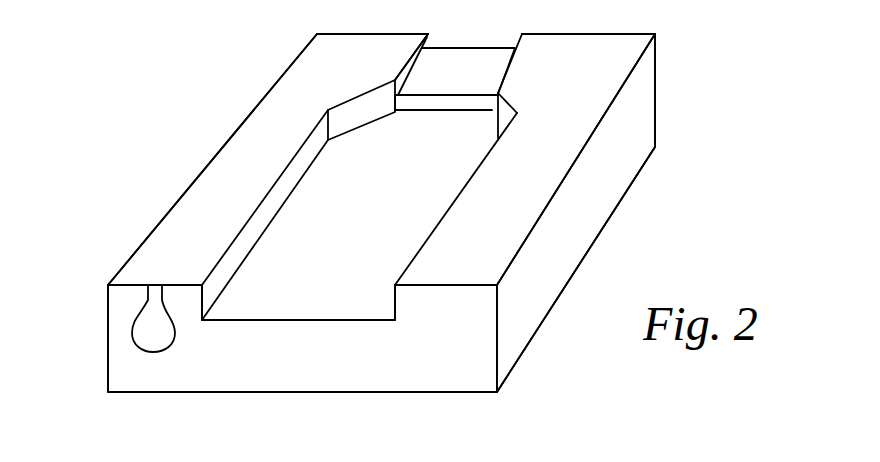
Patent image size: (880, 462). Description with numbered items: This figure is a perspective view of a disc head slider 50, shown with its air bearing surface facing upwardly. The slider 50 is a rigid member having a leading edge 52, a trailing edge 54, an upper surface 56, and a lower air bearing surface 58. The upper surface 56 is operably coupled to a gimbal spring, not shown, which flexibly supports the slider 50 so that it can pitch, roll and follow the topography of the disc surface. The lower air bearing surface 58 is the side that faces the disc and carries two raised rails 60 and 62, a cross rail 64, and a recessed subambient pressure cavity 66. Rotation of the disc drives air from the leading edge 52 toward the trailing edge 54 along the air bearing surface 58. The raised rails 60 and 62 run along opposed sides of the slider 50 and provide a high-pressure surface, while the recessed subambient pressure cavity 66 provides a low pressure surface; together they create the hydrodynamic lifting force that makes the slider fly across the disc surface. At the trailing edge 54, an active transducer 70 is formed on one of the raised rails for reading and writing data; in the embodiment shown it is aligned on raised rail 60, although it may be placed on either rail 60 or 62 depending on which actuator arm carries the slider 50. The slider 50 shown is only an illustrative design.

The slider 50 is at (670, 93).
The leading edge 52 is at (568, 34).
The trailing edge 54 is at (238, 375).
The upper surface 56 is at (534, 333).
The lower air bearing surface 58 is at (446, 130).
The raised rail 60 is at (235, 155).
The raised rail 62 is at (545, 163).
The cross rail 64 is at (452, 82).
The recessed subambient pressure cavity 66 is at (386, 221).
The active transducer 70 is at (145, 306).